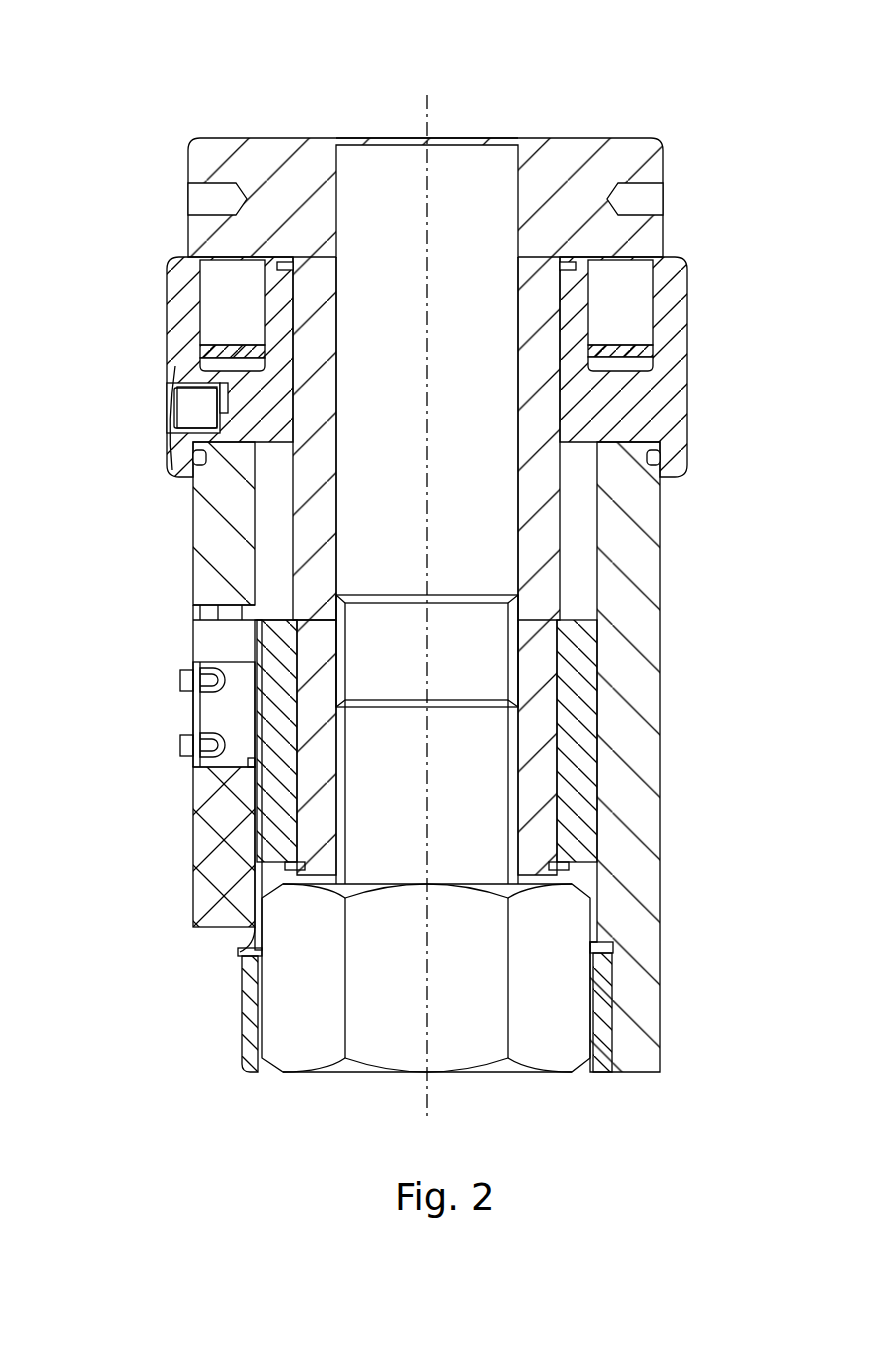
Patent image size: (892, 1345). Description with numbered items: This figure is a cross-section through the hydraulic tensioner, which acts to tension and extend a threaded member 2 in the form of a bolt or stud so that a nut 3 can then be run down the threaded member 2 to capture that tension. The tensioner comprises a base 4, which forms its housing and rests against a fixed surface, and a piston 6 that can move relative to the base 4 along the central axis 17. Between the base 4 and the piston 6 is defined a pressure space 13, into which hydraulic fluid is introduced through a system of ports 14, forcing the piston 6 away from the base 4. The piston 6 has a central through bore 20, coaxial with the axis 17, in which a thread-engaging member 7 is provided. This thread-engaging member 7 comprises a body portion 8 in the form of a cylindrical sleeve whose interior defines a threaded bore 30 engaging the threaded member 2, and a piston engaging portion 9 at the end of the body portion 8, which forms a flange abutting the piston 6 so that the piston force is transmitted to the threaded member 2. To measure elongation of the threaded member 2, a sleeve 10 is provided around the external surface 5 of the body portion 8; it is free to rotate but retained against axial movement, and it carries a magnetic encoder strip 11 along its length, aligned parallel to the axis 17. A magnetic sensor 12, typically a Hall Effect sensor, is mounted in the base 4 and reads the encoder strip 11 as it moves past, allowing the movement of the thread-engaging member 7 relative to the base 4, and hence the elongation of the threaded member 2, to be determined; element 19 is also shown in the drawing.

The threaded bore 30 is at (362, 117).
The central axis 17 is at (428, 115).
The piston engaging portion 9 is at (593, 168).
The thread-engaging member 7 is at (630, 157).
The central through bore 20 is at (297, 358).
The piston 6 is at (638, 287).
The pressure space 13 is at (637, 363).
The ports 14 is at (197, 408).
The body portion 8 is at (545, 598).
The sleeve 10 is at (583, 710).
The external surface 5 is at (545, 760).
The threaded member 2 is at (508, 820).
The retaining tab 19 is at (563, 860).
The base 4 is at (633, 897).
The nut 3 is at (563, 1017).
The magnetic sensor 12 is at (243, 757).
The magnetic encoder strip 11 is at (258, 820).